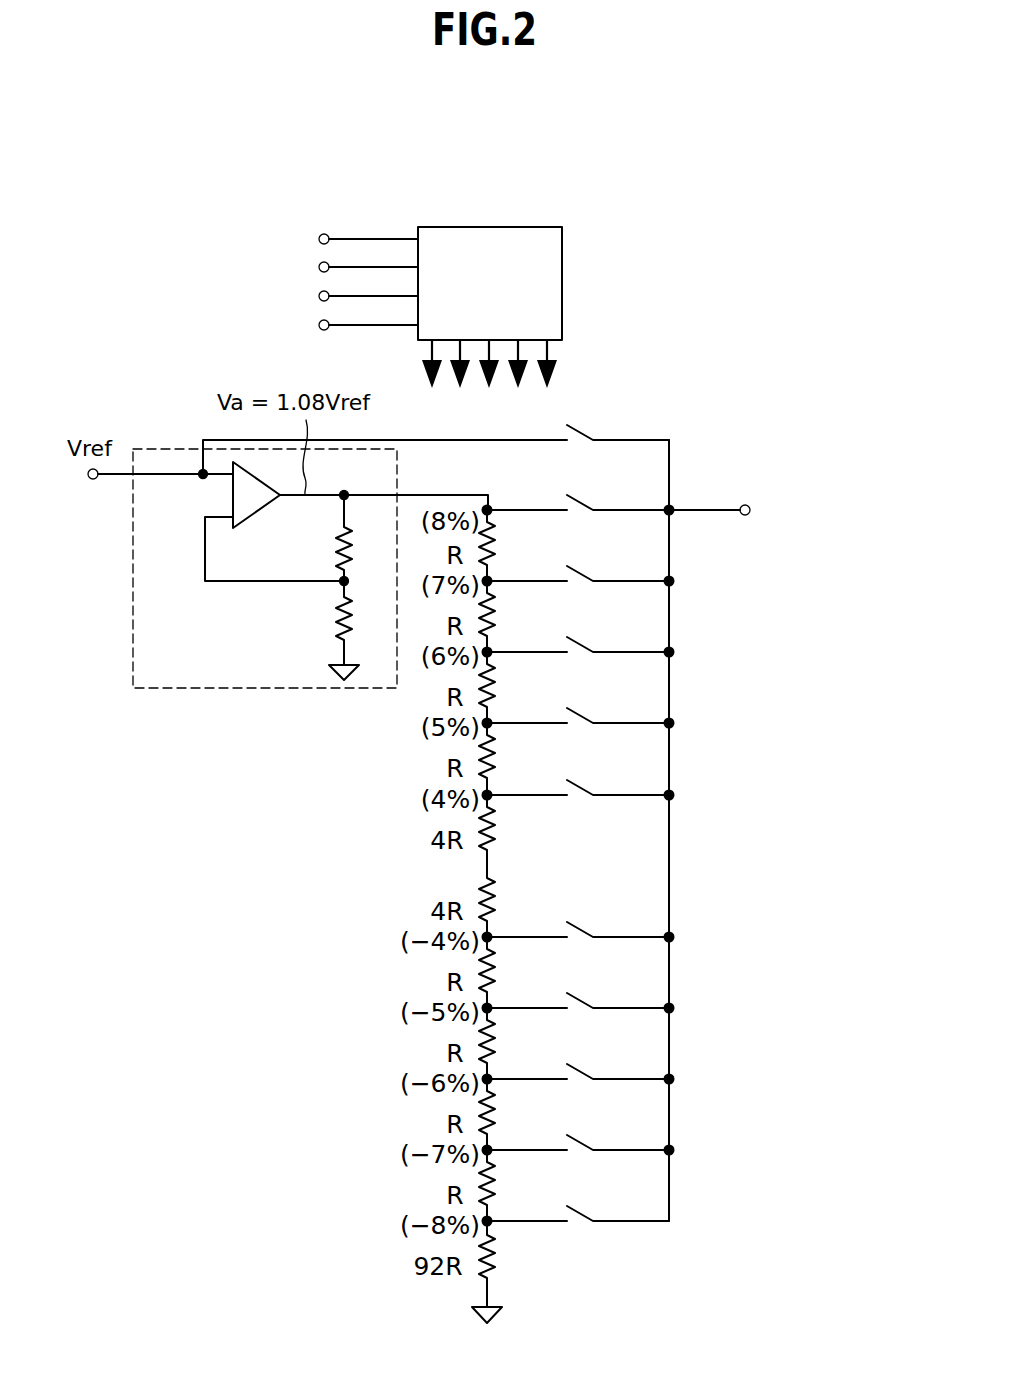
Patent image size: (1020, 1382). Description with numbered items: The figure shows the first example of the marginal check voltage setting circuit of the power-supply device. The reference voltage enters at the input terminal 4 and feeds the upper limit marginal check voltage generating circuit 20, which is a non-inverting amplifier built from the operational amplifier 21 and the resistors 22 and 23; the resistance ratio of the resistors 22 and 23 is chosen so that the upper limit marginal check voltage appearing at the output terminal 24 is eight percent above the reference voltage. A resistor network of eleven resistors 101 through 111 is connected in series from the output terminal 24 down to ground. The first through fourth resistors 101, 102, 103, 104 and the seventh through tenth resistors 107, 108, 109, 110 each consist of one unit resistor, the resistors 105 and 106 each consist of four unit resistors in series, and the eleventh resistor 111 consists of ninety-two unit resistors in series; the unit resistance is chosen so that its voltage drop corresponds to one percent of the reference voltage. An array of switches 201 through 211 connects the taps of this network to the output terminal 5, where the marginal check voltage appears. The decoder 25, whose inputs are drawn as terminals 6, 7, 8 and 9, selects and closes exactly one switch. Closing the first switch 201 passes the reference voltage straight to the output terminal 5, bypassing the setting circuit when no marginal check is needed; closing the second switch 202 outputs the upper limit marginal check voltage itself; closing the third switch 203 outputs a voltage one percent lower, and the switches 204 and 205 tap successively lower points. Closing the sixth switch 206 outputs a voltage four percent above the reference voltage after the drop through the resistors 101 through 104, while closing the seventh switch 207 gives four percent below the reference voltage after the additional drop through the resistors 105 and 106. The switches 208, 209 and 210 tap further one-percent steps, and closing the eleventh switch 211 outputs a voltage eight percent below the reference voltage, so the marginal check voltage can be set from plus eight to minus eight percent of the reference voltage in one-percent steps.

The input terminal 4 is at (92, 480).
The output terminal 5 is at (751, 511).
The decoder input terminal 6 is at (318, 238).
The decoder input terminal 7 is at (318, 267).
The decoder input terminal 8 is at (318, 296).
The decoder input terminal 9 is at (318, 325).
The upper limit marginal check voltage generating circuit 20 is at (151, 430).
The operational amplifier 21 is at (231, 498).
The resistor 22 is at (338, 548).
The resistor 23 is at (338, 617).
The output terminal 24 is at (347, 500).
The decoder 25 is at (487, 227).
The first resistor 101 is at (496, 542).
The second resistor 102 is at (496, 613).
The third resistor 103 is at (496, 684).
The fourth resistor 104 is at (496, 755).
The fifth resistor 105 is at (496, 827).
The sixth resistor 106 is at (496, 898).
The seventh resistor 107 is at (496, 969).
The eighth resistor 108 is at (496, 1040).
The ninth resistor 109 is at (496, 1111).
The tenth resistor 110 is at (496, 1182).
The eleventh resistor 111 is at (496, 1253).
The first switch 201 is at (585, 425).
The second switch 202 is at (585, 496).
The third switch 203 is at (585, 567).
The fourth switch 204 is at (585, 638).
The fifth switch 205 is at (585, 709).
The sixth switch 206 is at (585, 781).
The seventh switch 207 is at (585, 923).
The eighth switch 208 is at (585, 994).
The ninth switch 209 is at (585, 1065).
The tenth switch 210 is at (585, 1136).
The eleventh switch 211 is at (585, 1207).